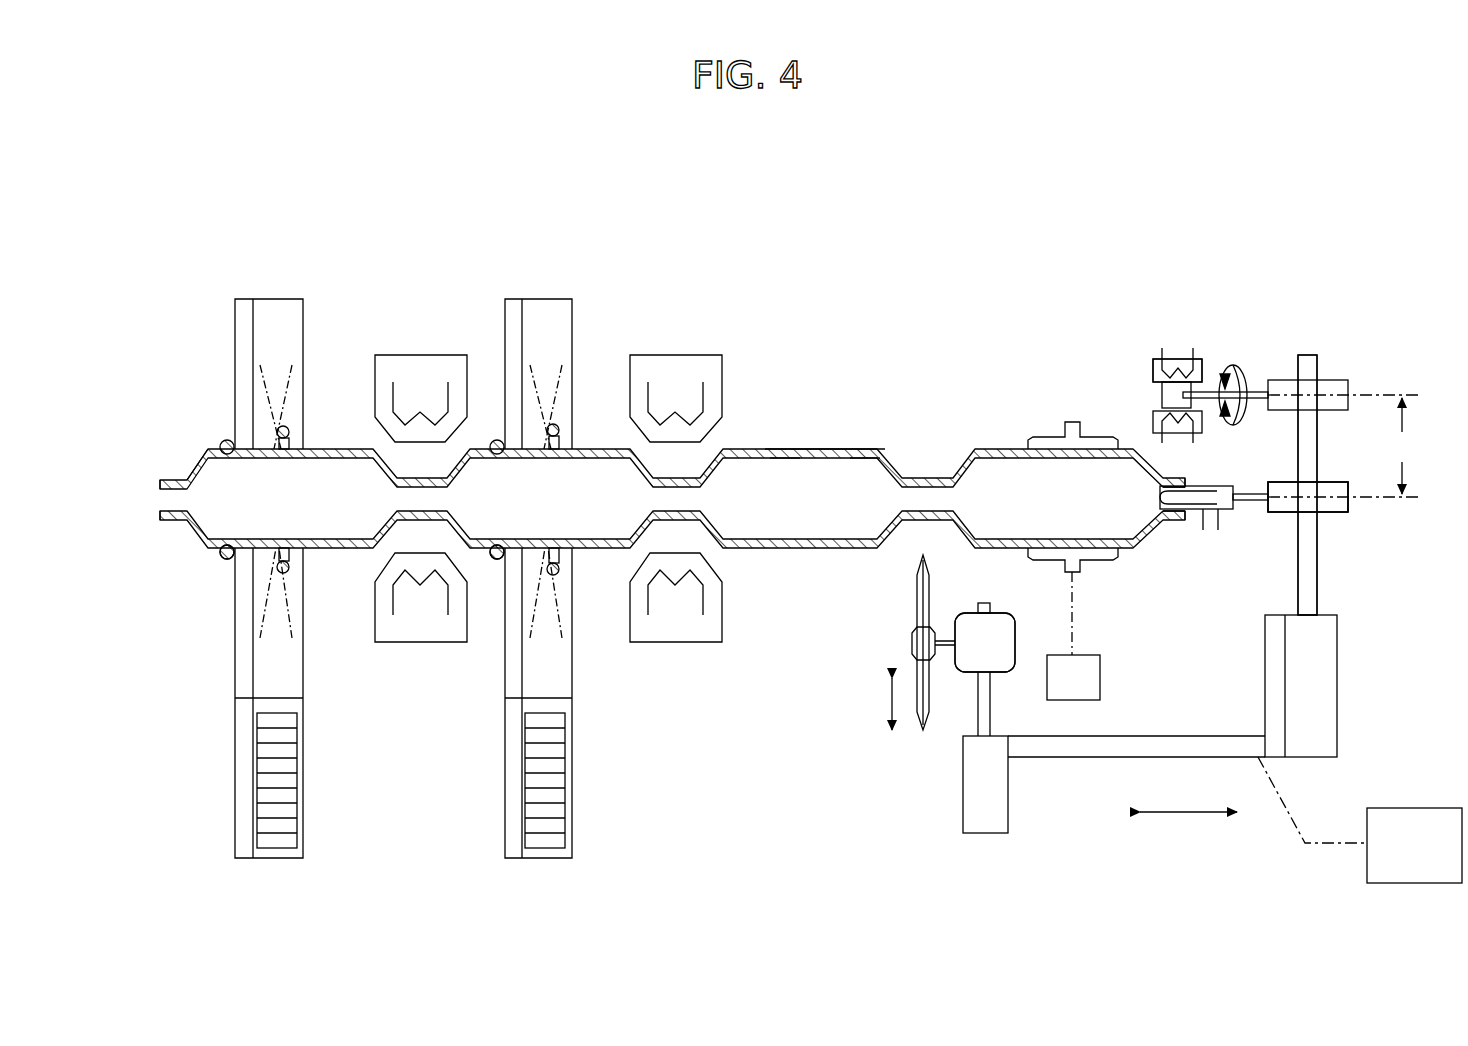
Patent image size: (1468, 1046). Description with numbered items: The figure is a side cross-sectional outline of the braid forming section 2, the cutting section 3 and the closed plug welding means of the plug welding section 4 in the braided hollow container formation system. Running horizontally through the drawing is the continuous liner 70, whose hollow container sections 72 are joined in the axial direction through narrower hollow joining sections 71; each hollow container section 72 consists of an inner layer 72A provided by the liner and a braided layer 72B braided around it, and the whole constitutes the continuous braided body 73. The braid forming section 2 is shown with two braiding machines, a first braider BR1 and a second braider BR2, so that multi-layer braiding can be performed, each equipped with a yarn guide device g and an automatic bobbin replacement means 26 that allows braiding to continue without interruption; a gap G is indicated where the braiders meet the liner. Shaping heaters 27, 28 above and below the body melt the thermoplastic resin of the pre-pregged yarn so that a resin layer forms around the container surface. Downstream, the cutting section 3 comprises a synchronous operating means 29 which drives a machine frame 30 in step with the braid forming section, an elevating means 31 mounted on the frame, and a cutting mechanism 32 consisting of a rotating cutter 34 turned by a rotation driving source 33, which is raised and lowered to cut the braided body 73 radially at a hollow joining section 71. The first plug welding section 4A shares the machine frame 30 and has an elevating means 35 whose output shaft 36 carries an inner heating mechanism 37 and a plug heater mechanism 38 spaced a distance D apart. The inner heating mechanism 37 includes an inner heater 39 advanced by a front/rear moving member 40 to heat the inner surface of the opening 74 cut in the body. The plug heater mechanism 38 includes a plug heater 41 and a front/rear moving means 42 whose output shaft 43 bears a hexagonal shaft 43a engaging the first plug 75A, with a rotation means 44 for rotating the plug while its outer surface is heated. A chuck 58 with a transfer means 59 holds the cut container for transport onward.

The braid forming section 2 is at (780, 233).
The cutting section 3 is at (925, 782).
The plug welding section 4 is at (1257, 352).
The first plug welding section 4A is at (1283, 560).
The automatic bobbin replacement means 26 is at (257, 777).
The shaping heater 27 is at (420, 642).
The shaping heater 28 is at (676, 642).
The synchronous operating means 29 is at (1432, 808).
The machine frame 30 is at (1062, 757).
The elevating means 31 is at (963, 815).
The cutting mechanism 32 is at (815, 593).
The rotation driving source 33 is at (960, 625).
The rotating cutter 34 is at (917, 650).
The elevating means 35 is at (1337, 688).
The output shaft 36 is at (1317, 583).
The inner heating mechanism 37 is at (1358, 523).
The plug heater mechanism 38 is at (1355, 367).
The inner heater 39 is at (1222, 512).
The front/rear moving member 40 is at (1348, 507).
The plug heater 41 is at (1155, 368).
The front/rear moving means 42 is at (1348, 392).
The output shaft 43 is at (1248, 380).
The hexagonal shaft 43a is at (1200, 384).
The rotation means 44 is at (1247, 412).
The chuck 58 is at (1035, 437).
The transfer means 59 is at (1100, 677).
The continuous liner 70 is at (172, 522).
The hollow joining section 71 is at (176, 480).
The hollow container section 72 is at (222, 440).
The inner layer 72A is at (787, 449).
The braided layer 72B is at (867, 449).
The continuous braided body 73 is at (885, 366).
The opening 74 is at (1185, 520).
The first plug 75A is at (1162, 398).
The first braider BR1 is at (275, 299).
The second braider BR2 is at (543, 299).
The gap G is at (222, 560).
The yarn guide device g is at (290, 430).
The distance D is at (1401, 446).